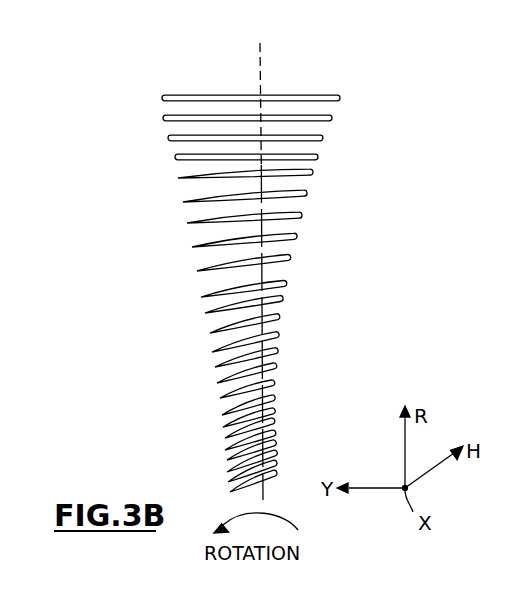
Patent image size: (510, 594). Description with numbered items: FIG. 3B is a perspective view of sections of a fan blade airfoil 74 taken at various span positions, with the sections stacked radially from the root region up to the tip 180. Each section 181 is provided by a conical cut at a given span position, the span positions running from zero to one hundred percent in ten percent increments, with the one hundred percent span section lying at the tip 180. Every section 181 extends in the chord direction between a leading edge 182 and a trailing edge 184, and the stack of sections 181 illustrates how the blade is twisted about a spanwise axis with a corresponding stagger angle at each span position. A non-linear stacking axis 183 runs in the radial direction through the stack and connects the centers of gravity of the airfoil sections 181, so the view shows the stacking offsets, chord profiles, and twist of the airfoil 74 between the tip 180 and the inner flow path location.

The helical coil 74 is at (104, 74).
The tip 180 is at (178, 96).
The sections 181 is at (310, 117).
The leading edge 182 is at (168, 178).
The non-linear stacking axis 183 is at (262, 62).
The trailing edge 184 is at (326, 173).